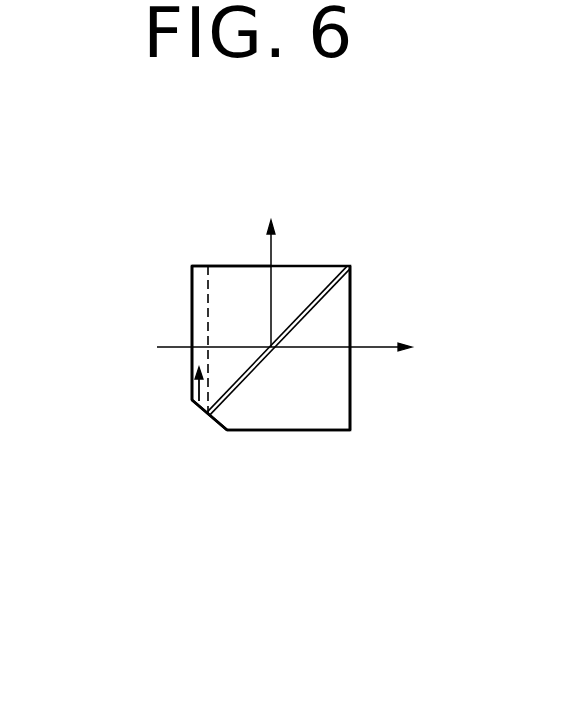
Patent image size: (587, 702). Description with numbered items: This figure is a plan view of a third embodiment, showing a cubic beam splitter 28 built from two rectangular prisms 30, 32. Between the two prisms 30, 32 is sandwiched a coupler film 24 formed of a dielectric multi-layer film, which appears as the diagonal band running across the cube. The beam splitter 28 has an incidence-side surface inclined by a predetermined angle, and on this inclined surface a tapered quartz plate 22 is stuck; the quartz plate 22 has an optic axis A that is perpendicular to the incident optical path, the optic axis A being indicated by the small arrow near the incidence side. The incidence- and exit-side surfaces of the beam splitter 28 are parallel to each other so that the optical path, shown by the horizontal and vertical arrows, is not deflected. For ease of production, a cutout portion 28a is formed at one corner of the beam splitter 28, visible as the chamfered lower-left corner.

The tapered quartz plate 22 is at (205, 320).
The coupler film 24 is at (326, 282).
The cubic beam splitter 28 is at (301, 256).
The cutout portion 28a is at (219, 427).
The rectangular prism 30 is at (230, 272).
The rectangular prism 32 is at (335, 398).
The optic axis A is at (192, 387).